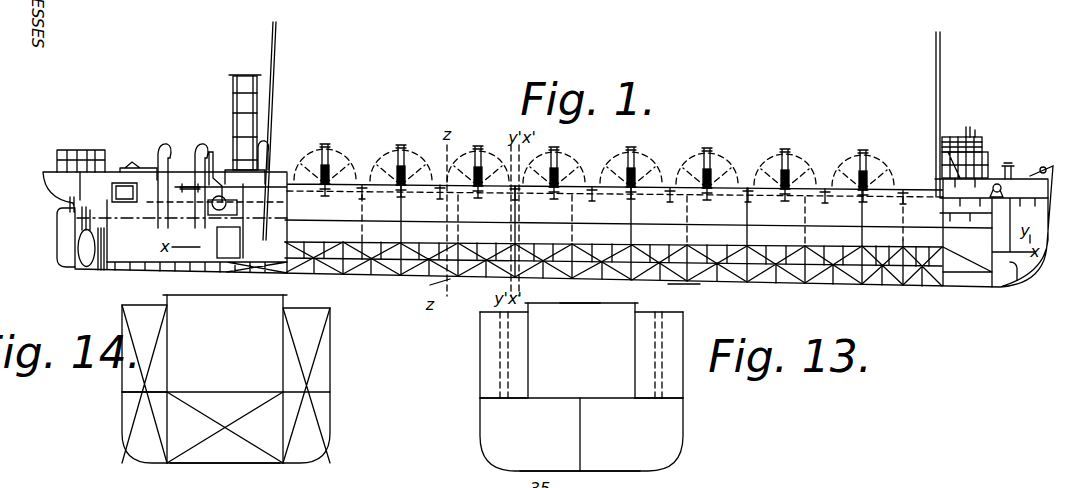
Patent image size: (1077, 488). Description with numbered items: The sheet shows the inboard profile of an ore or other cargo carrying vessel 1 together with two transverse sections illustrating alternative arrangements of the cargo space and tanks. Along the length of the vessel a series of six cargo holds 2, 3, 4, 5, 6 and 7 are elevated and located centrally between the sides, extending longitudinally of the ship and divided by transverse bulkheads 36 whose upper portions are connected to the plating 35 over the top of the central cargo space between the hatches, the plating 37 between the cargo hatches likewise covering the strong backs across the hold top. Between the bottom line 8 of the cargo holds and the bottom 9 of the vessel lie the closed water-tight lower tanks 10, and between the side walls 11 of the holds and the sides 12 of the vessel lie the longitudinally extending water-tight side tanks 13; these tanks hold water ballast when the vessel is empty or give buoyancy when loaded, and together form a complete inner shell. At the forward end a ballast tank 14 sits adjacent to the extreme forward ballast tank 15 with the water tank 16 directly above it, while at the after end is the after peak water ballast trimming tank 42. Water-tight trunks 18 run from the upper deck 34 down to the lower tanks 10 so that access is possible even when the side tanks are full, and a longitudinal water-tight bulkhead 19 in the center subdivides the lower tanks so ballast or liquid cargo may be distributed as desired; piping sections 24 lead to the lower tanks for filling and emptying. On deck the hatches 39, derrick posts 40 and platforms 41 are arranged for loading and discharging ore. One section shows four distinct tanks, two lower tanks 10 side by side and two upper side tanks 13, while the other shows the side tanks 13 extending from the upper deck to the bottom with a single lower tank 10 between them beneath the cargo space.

In FIG. 1, the cargo carrying vessel 1 is at (787, 284).
In FIG. 1, the cargo hold 2 is at (343, 218).
In FIG. 1, the cargo hold 3 is at (440, 218).
In FIG. 1, the cargo hold 4 is at (558, 218).
In FIG. 13, the cargo hold 4 is at (580, 332).
In FIG. 1, the cargo hold 5 is at (671, 219).
In FIG. 1, the cargo hold 6 is at (787, 220).
In FIG. 1, the cargo hold 7 is at (889, 222).
In FIG. 1, the bottom line of the cargo holds 8 is at (374, 240).
In FIG. 14, the bottom line of the cargo holds 8 is at (240, 395).
In FIG. 13, the bottom line of the cargo holds 8 is at (594, 399).
In FIG. 1, the bottom of the vessel 9 is at (439, 291).
In FIG. 14, the bottom of the vessel 9 is at (225, 473).
In FIG. 13, the bottom of the vessel 9 is at (598, 472).
In FIG. 1, the lower tank 10 is at (292, 262).
In FIG. 14, the lower tank 10 is at (175, 425).
In FIG. 13, the lower tank 10 is at (571, 421).
In FIG. 14, the side wall of the cargo holds 11 is at (283, 349).
In FIG. 13, the side wall of the cargo holds 11 is at (530, 377).
In FIG. 14, the side of the vessel 12 is at (120, 398).
In FIG. 13, the side of the vessel 12 is at (480, 434).
In FIG. 14, the side tank 13 is at (132, 370).
In FIG. 13, the side tank 13 is at (580, 355).
In FIG. 1, the ballast tank 14 is at (994, 233).
In FIG. 1, the extreme forward ballast tank 15 is at (1017, 270).
In FIG. 1, the water tank 16 is at (982, 205).
In FIG. 13, the water-tight trunk 18 is at (500, 378).
In FIG. 13, the longitudinal water-tight bulkhead 19 is at (580, 423).
In FIG. 1, the separate section of piping 24 is at (264, 270).
In FIG. 1, the upper deck 34 is at (680, 284).
In FIG. 14, the upper deck 34 is at (147, 305).
In FIG. 13, the upper deck 34 is at (589, 301).
In FIG. 1, the plating over the top of the central cargo space 35 is at (406, 180).
In FIG. 14, the plating over the top of the central cargo space 35 is at (225, 310).
In FIG. 13, the plating over the top of the central cargo space 35 is at (581, 312).
In FIG. 1, the transverse bulkhead of the central cargo space 36 is at (745, 215).
In FIG. 1, the plating between the cargo hatches 37 is at (360, 185).
In FIG. 14, the plating between the cargo hatches 37 is at (360, 482).
In FIG. 13, the plating between the cargo hatches 37 is at (463, 482).
In FIG. 1, the hatch 39 is at (364, 176).
In FIG. 1, the derrick post 40 is at (323, 157).
In FIG. 13, the derrick post 40 is at (680, 482).
In FIG. 1, the platform 41 is at (712, 180).
In FIG. 13, the platform 41 is at (840, 482).
In FIG. 1, the after peak water ballast trimming tank 42 is at (96, 175).